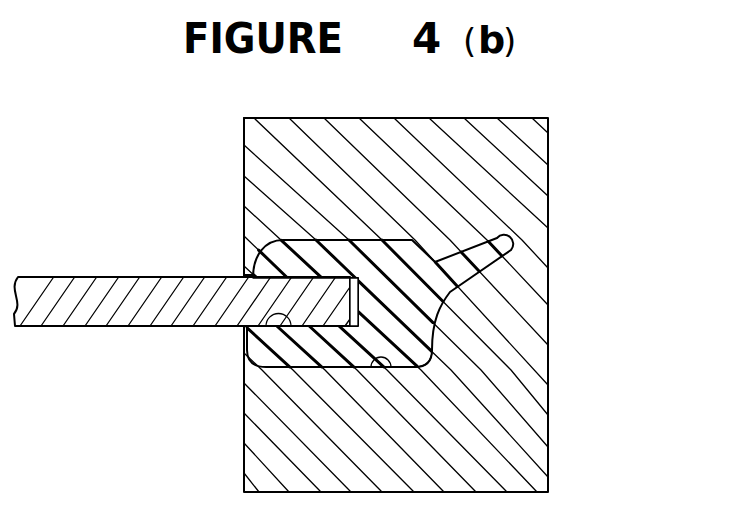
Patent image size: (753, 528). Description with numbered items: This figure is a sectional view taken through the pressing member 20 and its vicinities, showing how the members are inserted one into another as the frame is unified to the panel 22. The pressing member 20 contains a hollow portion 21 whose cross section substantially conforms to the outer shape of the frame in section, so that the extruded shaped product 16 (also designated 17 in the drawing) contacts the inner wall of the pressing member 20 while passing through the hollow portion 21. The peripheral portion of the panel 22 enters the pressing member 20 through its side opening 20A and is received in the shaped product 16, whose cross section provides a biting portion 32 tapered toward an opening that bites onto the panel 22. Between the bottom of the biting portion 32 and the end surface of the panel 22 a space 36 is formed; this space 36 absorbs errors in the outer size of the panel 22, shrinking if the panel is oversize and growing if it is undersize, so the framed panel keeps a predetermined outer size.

The shaped product 16 is at (397, 222).
The seal member 17 is at (378, 265).
The pressing member 20 is at (493, 328).
The opening in housing 20A is at (243, 331).
The hollow portion 21 is at (400, 368).
The panel 22 is at (178, 305).
The biting portion 32 is at (270, 326).
The space 36 is at (342, 300).